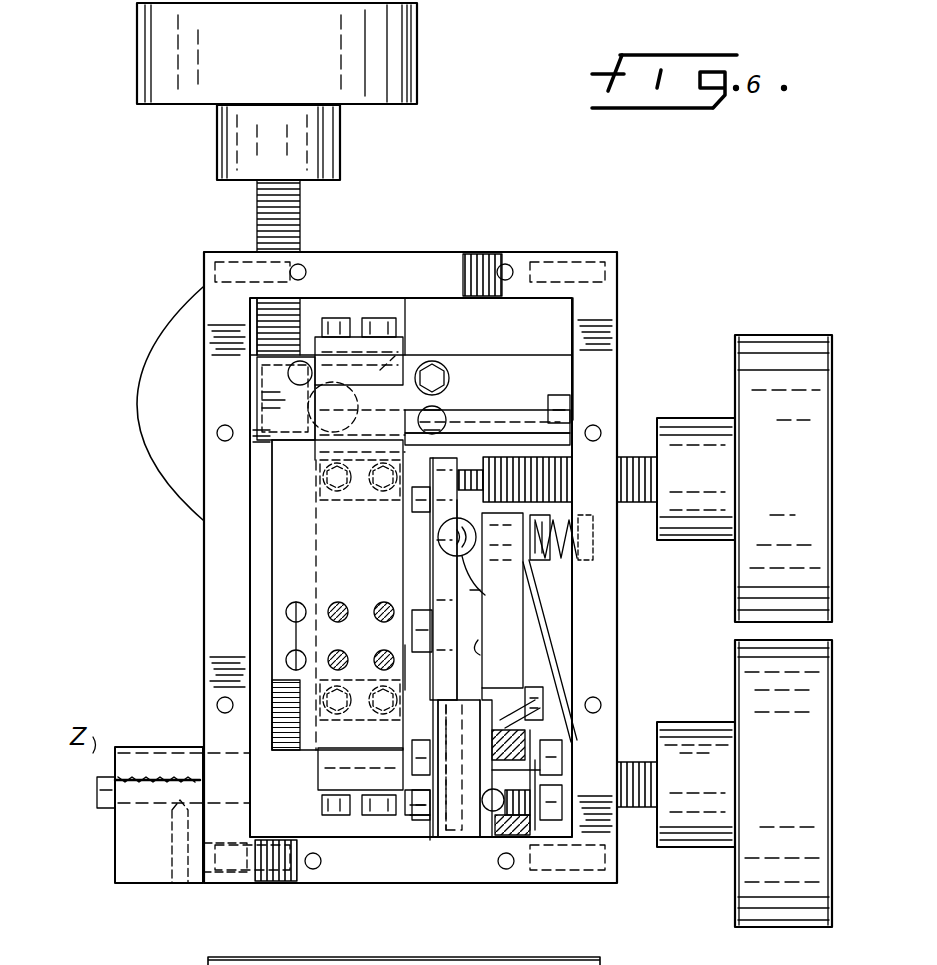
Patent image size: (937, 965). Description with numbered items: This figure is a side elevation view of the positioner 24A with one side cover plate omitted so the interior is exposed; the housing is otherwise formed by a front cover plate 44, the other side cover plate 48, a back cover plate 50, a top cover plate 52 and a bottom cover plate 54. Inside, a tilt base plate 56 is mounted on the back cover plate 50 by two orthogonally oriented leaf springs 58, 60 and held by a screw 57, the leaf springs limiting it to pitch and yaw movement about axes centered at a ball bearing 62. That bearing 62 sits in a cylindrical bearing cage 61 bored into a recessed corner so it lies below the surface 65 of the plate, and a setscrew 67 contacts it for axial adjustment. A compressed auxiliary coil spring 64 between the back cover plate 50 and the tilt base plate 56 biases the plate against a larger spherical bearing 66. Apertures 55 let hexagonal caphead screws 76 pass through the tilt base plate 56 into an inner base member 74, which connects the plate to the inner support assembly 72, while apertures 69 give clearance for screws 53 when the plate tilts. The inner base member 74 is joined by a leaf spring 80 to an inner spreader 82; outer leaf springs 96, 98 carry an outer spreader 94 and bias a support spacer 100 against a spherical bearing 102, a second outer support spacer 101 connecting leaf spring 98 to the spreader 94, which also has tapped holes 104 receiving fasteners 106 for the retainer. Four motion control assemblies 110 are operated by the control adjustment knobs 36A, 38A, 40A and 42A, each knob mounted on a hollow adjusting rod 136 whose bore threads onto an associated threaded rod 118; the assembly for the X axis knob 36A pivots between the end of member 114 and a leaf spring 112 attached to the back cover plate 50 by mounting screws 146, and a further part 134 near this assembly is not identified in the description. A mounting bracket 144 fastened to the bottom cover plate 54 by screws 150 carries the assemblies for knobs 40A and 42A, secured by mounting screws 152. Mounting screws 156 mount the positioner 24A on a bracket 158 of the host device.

The control adjustment knob 38A is at (410, 56).
The hollow adjusting rod 136 is at (300, 226).
The front cover plate 44 is at (215, 534).
The X axis knob 36A is at (172, 327).
The side cover plate 48 is at (545, 300).
The top cover plate 52 is at (470, 262).
The back cover plate 50 is at (600, 322).
The positioner 24A is at (655, 270).
The threaded rod 118 is at (300, 422).
The inner spreader 82 is at (315, 523).
The outer leaf spring 96 is at (345, 337).
The support spacer 100 is at (385, 337).
The nut 134 is at (410, 356).
The member 114 is at (440, 420).
The motion control assembly 110 is at (440, 405).
The leaf spring 112 is at (492, 420).
The mounting screws 146 is at (570, 408).
The leaf spring 80 is at (320, 578).
The spherical bearing 102 is at (320, 480).
The inner support assembly 72 is at (316, 538).
The tapped holes 104 is at (306, 615).
The fasteners 106 is at (384, 660).
The outer spreader 94 is at (285, 607).
The inner base member 74 is at (446, 647).
The control adjustment knob 42A is at (832, 560).
The control adjustment knob 40A is at (770, 925).
The tilt base plate 56 is at (527, 637).
The screw 57 is at (505, 558).
The auxiliary coil spring 64 is at (558, 560).
The spherical bearing 66 is at (491, 588).
The surface 65 is at (494, 638).
The apertures 55 is at (515, 700).
The leaf spring 58 is at (540, 667).
The hexagonal caphead screws 76 is at (540, 703).
The apertures 69 is at (540, 735).
The screws 53 is at (555, 750).
The ball bearing 62 is at (485, 812).
The cylindrical bearing cage 61 is at (497, 825).
The setscrew 67 is at (515, 830).
The leaf spring 60 is at (548, 823).
The screws 150 is at (437, 880).
The mounting bracket 144 is at (437, 840).
The second outer support spacer 101 is at (318, 770).
The outer leaf spring 98 is at (318, 800).
The mounting screws 152 is at (405, 815).
The bottom cover plate 54 is at (318, 883).
The bracket 158 is at (148, 873).
The mounting screws 156 is at (105, 813).